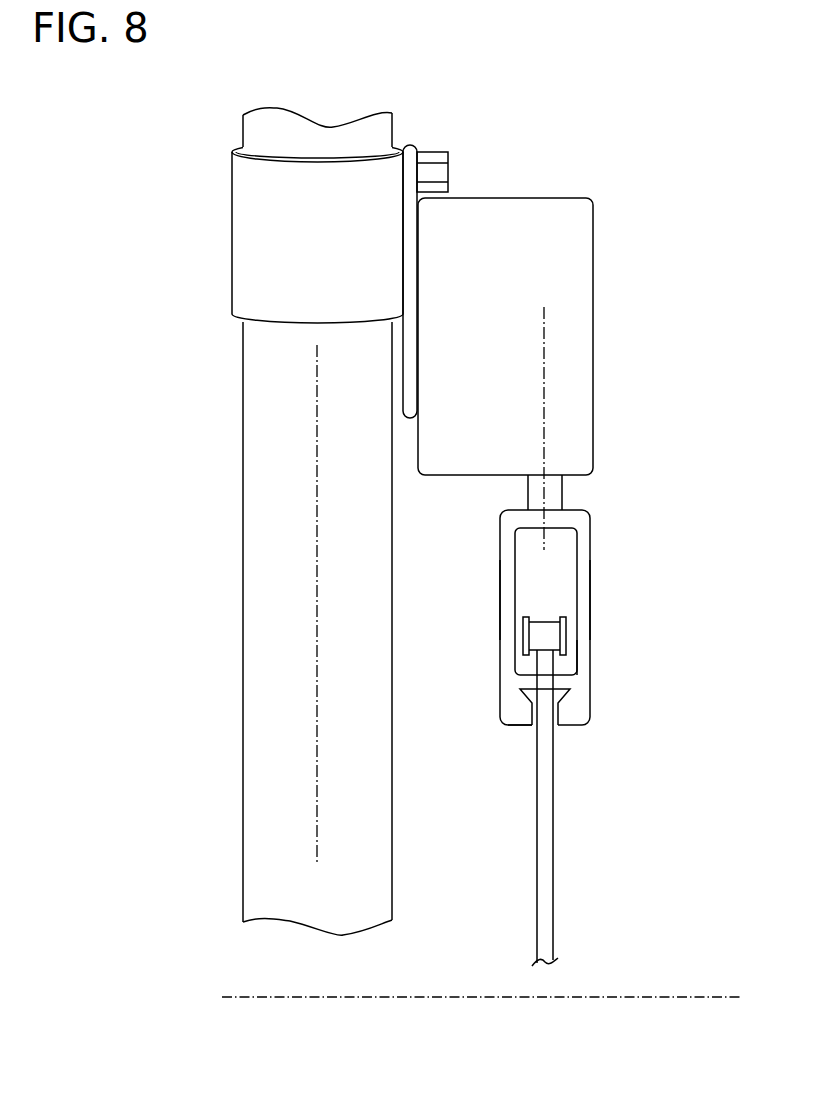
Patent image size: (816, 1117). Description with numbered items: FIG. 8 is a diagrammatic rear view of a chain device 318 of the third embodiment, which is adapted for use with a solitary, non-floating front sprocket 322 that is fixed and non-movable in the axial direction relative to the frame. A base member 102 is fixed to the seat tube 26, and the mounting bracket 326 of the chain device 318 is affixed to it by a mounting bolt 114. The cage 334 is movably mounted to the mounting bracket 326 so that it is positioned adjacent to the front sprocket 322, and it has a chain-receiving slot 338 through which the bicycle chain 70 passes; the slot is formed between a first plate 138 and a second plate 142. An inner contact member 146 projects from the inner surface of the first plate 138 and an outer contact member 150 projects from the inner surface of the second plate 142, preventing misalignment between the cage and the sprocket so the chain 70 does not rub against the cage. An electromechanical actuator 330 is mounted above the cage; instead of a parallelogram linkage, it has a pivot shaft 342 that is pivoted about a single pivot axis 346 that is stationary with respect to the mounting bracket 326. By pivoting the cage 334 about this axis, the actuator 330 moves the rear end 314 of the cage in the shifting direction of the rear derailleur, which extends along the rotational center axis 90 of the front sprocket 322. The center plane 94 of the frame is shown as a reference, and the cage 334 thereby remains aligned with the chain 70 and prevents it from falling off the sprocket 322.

The seat tube 26 is at (250, 405).
The center plane 94 is at (317, 802).
The base member 102 is at (247, 273).
The mounting bracket 326 is at (408, 240).
The mounting bolt 114 is at (430, 155).
The actuator 330 is at (573, 268).
The single pivot axis 346 is at (543, 392).
The pivot shaft 342 is at (555, 495).
The cage 334 is at (590, 557).
The chain-receiving slot 338 is at (523, 558).
The first plate 138 is at (498, 597).
The second plate 142 is at (588, 602).
The chain 70 is at (523, 638).
The rear end of the cage 314 is at (580, 655).
The outer contact member 150 is at (577, 705).
The inner contact member 146 is at (517, 722).
The front sprocket 322 is at (545, 857).
The rotational center axis 90 is at (282, 997).
The chain device 318 is at (608, 116).